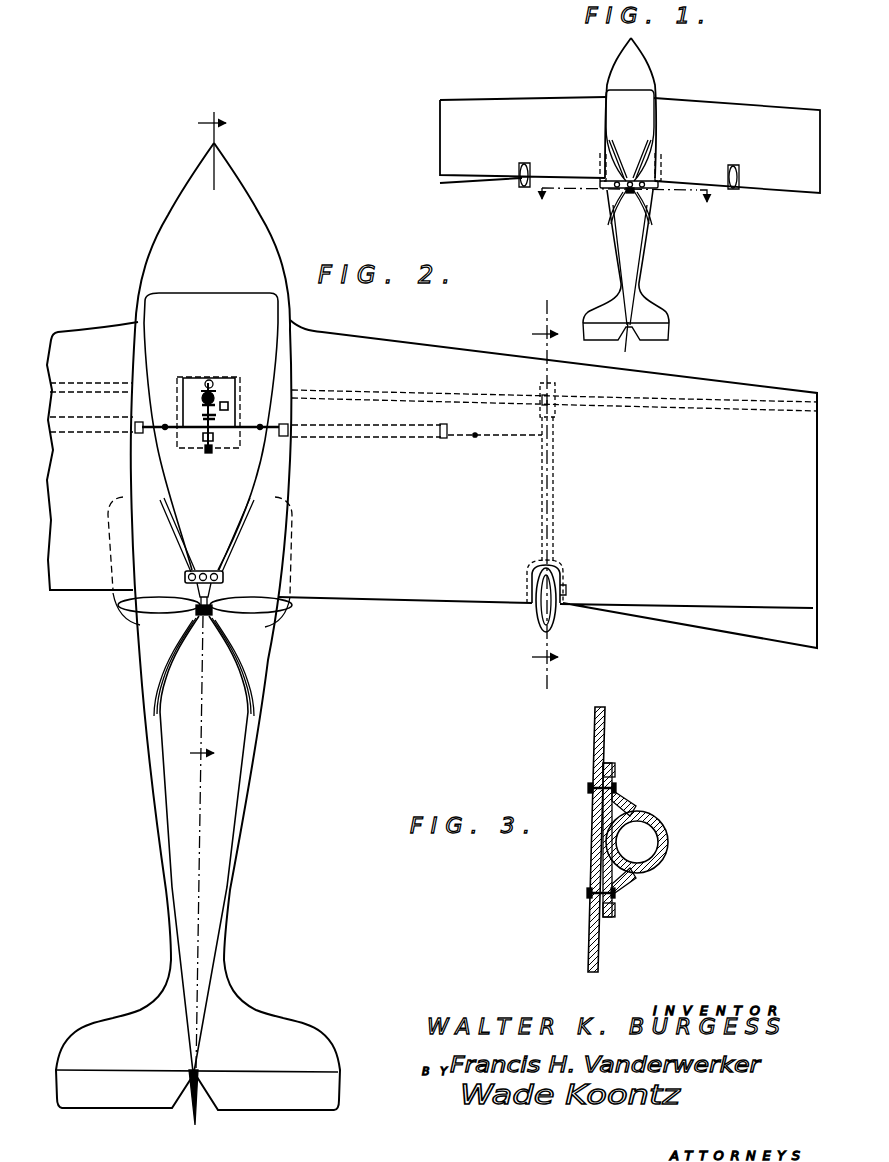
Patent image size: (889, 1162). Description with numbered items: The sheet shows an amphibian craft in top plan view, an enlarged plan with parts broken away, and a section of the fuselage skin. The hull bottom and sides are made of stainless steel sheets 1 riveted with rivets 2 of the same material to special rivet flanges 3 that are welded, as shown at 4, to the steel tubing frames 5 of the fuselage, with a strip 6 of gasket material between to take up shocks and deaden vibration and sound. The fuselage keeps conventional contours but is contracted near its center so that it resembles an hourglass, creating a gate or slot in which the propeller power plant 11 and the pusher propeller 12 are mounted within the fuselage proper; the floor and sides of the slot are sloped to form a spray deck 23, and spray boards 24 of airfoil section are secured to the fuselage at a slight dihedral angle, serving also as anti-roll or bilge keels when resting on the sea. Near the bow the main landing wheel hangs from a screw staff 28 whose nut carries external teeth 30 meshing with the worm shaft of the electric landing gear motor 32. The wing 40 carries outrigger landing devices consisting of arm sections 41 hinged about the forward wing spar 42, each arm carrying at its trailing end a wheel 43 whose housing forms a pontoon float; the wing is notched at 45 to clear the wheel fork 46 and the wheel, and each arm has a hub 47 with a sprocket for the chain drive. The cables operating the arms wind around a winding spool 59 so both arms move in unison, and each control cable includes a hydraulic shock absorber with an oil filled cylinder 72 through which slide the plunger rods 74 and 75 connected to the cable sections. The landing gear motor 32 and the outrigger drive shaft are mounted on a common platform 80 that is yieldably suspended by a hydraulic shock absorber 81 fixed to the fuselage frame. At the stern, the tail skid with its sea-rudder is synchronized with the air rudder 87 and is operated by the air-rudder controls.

In FIG. 2, the stainless steel sheets 1 is at (130, 472).
In FIG. 1, the stainless steel sheets 1 is at (605, 118).
In FIG. 3, the stainless steel sheets 1 is at (593, 727).
In FIG. 3, the rivets 2 is at (588, 789).
In FIG. 3, the rivet flanges 3 is at (624, 807).
In FIG. 3, the weld 4 is at (593, 837).
In FIG. 2, the steel tubing frames 5 is at (207, 441).
In FIG. 3, the steel tubing frames 5 is at (669, 842).
In FIG. 1, the strip of gasket material 6 is at (622, 204).
In FIG. 3, the strip of gasket material 6 is at (609, 908).
In FIG. 2, the propeller power plant 11 is at (205, 570).
In FIG. 1, the propeller power plant 11 is at (638, 175).
In FIG. 2, the propeller 12 is at (241, 600).
In FIG. 1, the propeller 12 is at (600, 178).
In FIG. 2, the spray deck 23 is at (202, 535).
In FIG. 1, the spray deck 23 is at (610, 160).
In FIG. 2, the spray boards 24 is at (118, 624).
In FIG. 1, the spray boards 24 is at (603, 196).
In FIG. 2, the screw staff 28 is at (202, 392).
In FIG. 2, the external teeth 30 is at (218, 392).
In FIG. 2, the landing gear motor 32 is at (229, 406).
In FIG. 2, the wing 40 is at (432, 484).
In FIG. 1, the wing 40 is at (630, 145).
In FIG. 2, the arm sections 41 is at (555, 482).
In FIG. 2, the forward wing spar 42 is at (630, 403).
In FIG. 2, the wheel 43 is at (556, 618).
In FIG. 1, the wheel 43 is at (521, 188).
In FIG. 2, the notch 45 is at (560, 571).
In FIG. 1, the notch 45 is at (519, 168).
In FIG. 2, the wheel fork 46 is at (566, 588).
In FIG. 2, the hub 47 is at (556, 400).
In FIG. 2, the winding spool 59 is at (203, 443).
In FIG. 2, the cylinder 72 is at (364, 421).
In FIG. 2, the plunger rod 74 is at (136, 433).
In FIG. 2, the plunger rod 75 is at (468, 438).
In FIG. 2, the platform 80 is at (211, 454).
In FIG. 2, the hydraulic shock absorber 81 is at (211, 379).
In FIG. 2, the air rudder 87 is at (192, 1118).
In FIG. 1, the air rudder 87 is at (637, 352).